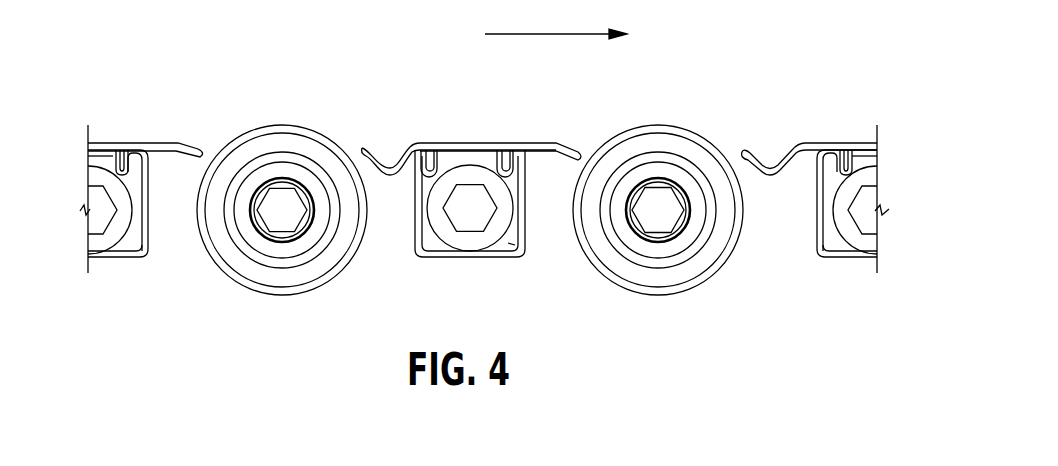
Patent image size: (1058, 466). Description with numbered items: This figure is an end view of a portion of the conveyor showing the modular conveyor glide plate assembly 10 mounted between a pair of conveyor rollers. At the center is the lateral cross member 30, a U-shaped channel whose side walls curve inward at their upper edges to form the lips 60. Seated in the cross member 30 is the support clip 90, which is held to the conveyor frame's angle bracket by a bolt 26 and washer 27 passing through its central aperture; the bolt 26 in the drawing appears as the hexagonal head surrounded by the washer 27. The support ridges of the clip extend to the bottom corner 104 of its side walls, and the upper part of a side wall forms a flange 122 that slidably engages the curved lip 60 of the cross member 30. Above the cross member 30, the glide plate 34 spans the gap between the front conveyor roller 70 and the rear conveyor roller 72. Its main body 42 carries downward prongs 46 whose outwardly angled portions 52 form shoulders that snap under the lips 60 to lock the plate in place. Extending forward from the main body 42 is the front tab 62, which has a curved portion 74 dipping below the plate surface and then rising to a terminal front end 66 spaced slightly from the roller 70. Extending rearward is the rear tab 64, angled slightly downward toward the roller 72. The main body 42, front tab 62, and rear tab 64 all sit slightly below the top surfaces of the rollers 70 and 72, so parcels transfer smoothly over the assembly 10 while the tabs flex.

The modular conveyor glide plate assembly 10 is at (212, 75).
The bolt 26 is at (470, 212).
The washer 27 is at (481, 244).
The lateral cross member 30 is at (157, 247).
The glide plate 34 is at (449, 126).
The main body 42 is at (474, 143).
The prongs 46 is at (427, 163).
The outwardly angled portion 52 is at (426, 185).
The lip 60 is at (504, 150).
The front tab 62 is at (389, 148).
The rear tab 64 is at (174, 140).
The terminal front end 66 is at (578, 159).
The front conveyor roller 70 is at (283, 106).
The rear conveyor roller 72 is at (693, 118).
The curved portion 74 is at (368, 153).
The support clip 90 is at (520, 186).
The bottom corner 104 is at (508, 243).
The flange 122 is at (578, 130).